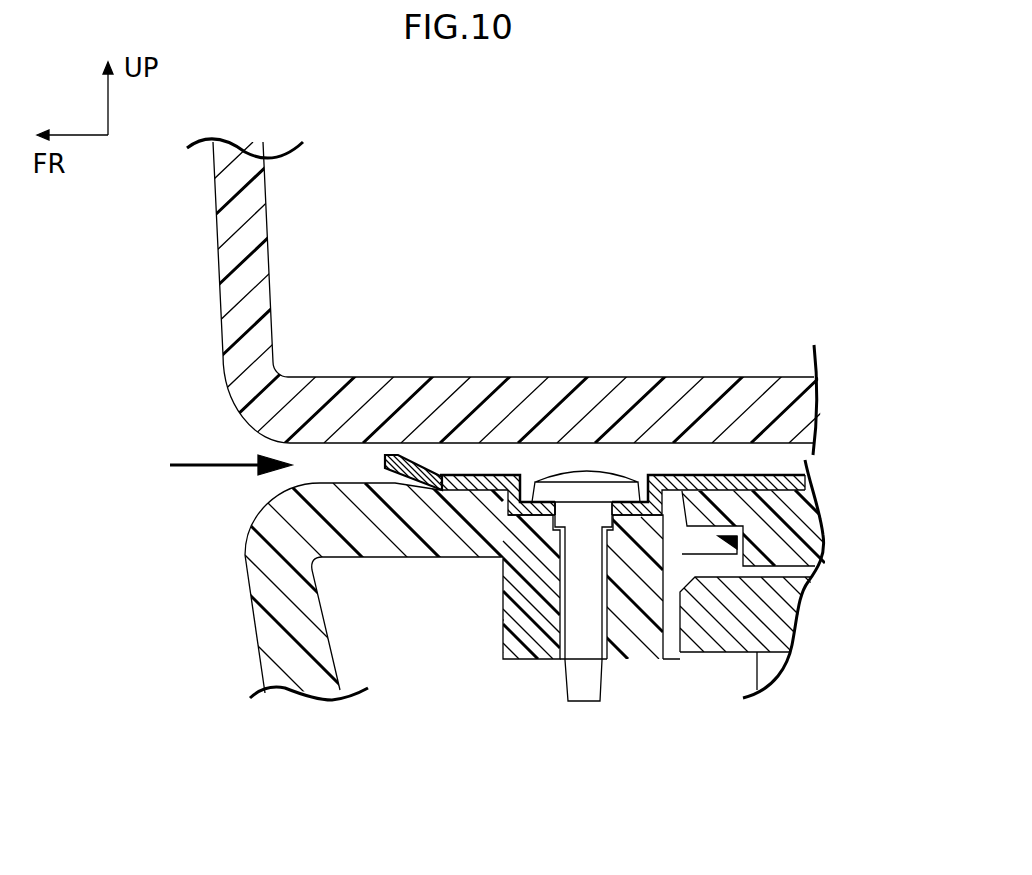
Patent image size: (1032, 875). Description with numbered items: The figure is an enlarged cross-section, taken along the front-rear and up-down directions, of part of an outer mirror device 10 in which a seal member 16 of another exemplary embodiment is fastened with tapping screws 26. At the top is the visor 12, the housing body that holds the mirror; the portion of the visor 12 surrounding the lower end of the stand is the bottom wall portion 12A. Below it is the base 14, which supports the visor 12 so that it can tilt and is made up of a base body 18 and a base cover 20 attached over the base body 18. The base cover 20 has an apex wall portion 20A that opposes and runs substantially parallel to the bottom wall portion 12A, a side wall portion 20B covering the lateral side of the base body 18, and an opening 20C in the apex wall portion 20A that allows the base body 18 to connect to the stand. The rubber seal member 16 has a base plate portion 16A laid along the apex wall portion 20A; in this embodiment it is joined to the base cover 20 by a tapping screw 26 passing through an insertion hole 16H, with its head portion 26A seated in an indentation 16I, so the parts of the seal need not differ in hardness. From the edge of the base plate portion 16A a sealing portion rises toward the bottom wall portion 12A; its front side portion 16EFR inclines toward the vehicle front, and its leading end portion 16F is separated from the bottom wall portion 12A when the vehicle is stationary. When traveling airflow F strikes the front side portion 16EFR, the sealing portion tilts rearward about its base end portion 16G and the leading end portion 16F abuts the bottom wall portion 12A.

The outer mirror device 10 is at (130, 306).
The visor 12 is at (205, 236).
The bottom wall portion 12A is at (630, 385).
The base 14 is at (658, 745).
The seal member 16 is at (597, 519).
The base plate portion 16A is at (677, 475).
The leading end portion 16F is at (451, 381).
The front side portion 16EFR is at (400, 452).
The base end portion 16G is at (503, 475).
The insertion hole 16H is at (565, 502).
The indentation 16I is at (547, 503).
The base body 18 is at (706, 655).
The base cover 20 is at (255, 614).
The apex wall portion 20A is at (377, 550).
The side wall portion 20B is at (258, 643).
The opening 20C is at (743, 552).
The tapping screw 26 is at (586, 519).
The head portion 26A is at (584, 471).
The traveling airflow F is at (215, 467).